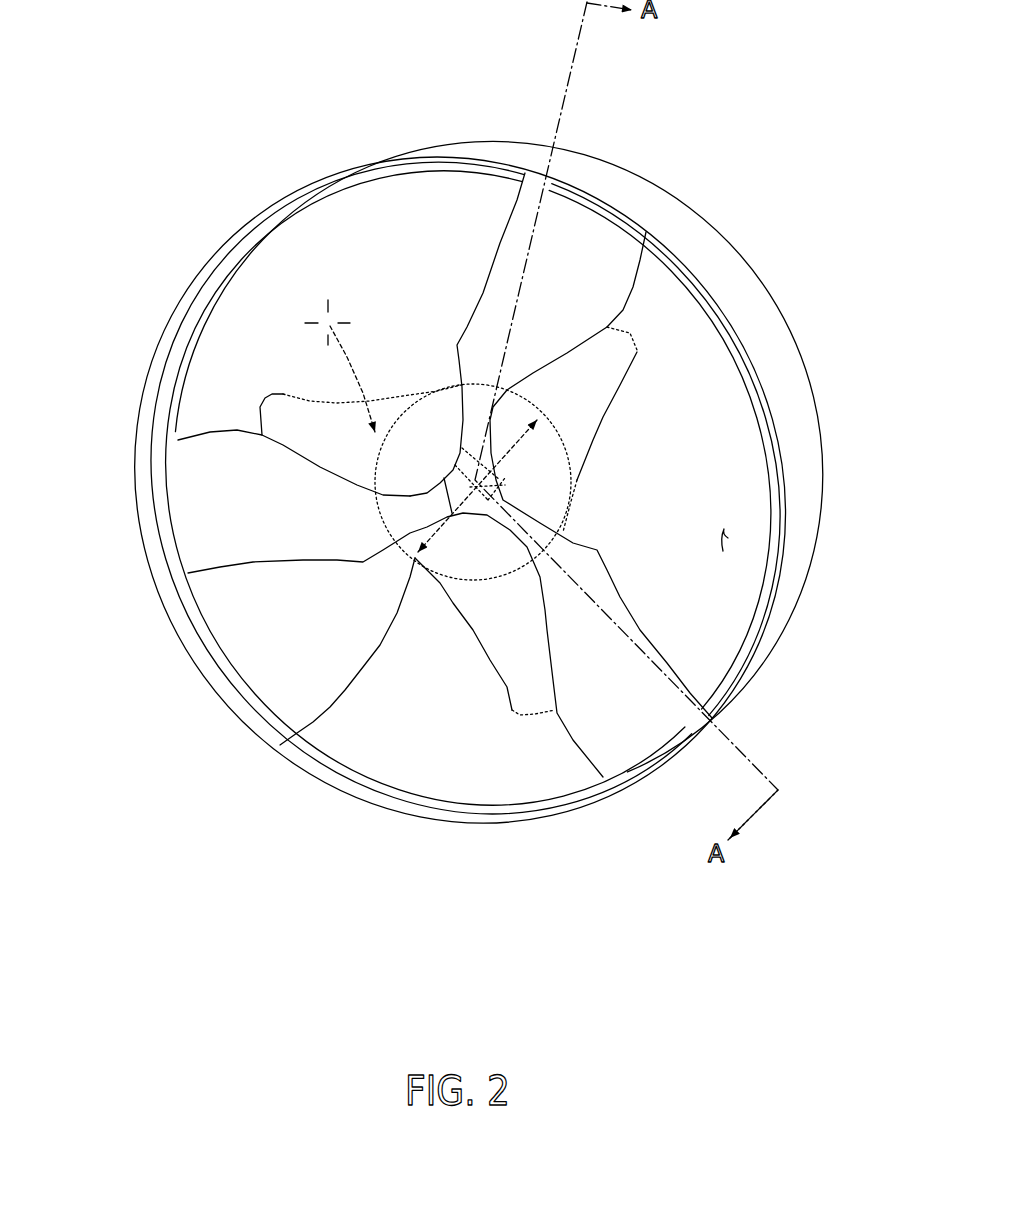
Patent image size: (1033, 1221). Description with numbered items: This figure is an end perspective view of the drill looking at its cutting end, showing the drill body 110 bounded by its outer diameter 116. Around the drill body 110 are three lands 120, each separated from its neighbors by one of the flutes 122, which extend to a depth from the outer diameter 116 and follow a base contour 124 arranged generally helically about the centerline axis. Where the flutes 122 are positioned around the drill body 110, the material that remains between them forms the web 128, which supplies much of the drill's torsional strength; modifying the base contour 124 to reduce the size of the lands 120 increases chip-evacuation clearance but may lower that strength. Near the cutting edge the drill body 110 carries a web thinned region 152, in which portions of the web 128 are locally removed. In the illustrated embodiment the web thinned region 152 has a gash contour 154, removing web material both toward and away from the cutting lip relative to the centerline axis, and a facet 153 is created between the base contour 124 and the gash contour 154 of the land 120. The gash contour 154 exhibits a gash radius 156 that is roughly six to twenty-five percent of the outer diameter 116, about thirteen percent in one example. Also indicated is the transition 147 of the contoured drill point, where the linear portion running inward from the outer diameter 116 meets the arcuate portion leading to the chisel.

The drill body 110 is at (770, 160).
The outer diameter 116 is at (375, 810).
The lands 120 is at (597, 207).
The flutes 122 is at (355, 226).
The base contour 124 is at (728, 538).
The web 128 is at (280, 745).
The transition 147 is at (503, 502).
The web thinned region 152 is at (275, 448).
The facet 153 is at (607, 410).
The gash contour 154 is at (278, 423).
The gash radius 156 is at (350, 358).